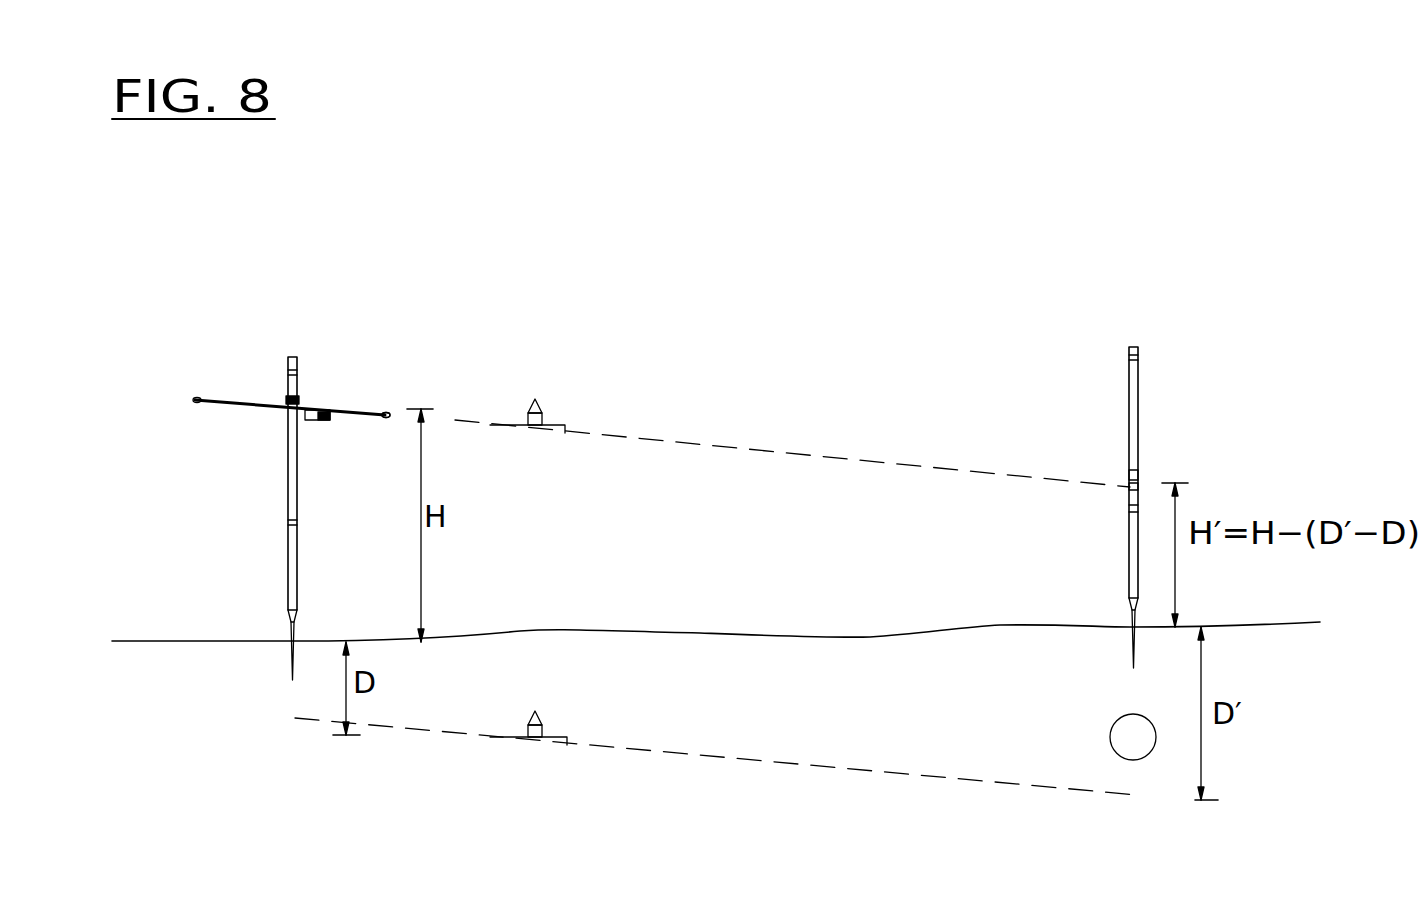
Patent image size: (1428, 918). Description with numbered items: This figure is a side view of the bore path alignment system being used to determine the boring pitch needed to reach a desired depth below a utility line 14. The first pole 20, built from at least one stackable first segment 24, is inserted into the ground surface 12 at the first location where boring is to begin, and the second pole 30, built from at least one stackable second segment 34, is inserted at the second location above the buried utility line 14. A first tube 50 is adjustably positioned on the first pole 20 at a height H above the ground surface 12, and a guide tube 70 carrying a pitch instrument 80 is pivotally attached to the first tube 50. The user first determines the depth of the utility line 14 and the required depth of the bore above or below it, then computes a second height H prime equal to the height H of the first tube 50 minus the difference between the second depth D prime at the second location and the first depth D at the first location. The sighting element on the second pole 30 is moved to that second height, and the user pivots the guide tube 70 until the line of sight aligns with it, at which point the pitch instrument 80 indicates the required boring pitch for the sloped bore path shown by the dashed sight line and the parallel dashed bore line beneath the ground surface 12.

The ground surface 12 is at (588, 631).
The utility line 14 is at (1126, 728).
The first pole 20 is at (348, 452).
The first segment 24 is at (288, 481).
The second pole 30 is at (1112, 470).
The second segment 34 is at (1130, 560).
The first tube 50 is at (1139, 483).
The guide tube 70 is at (382, 413).
The pitch instrument 80 is at (313, 410).